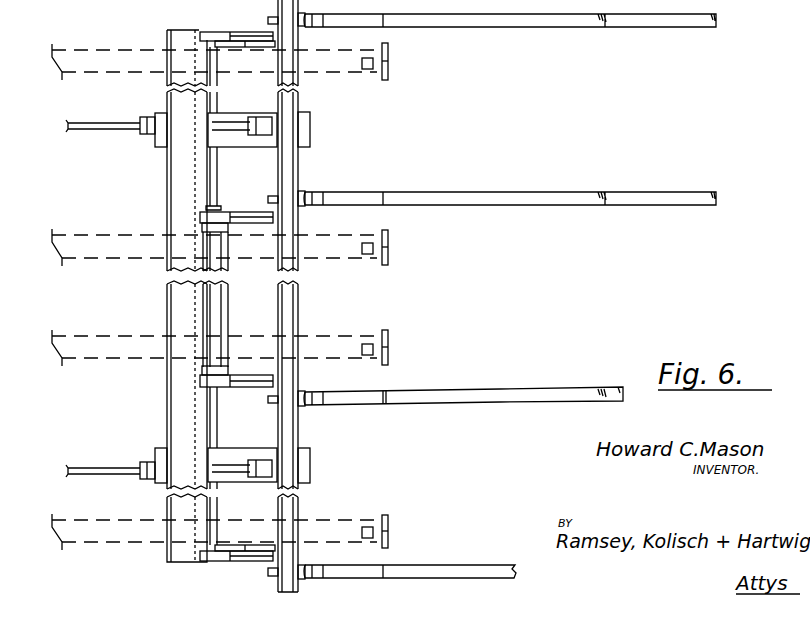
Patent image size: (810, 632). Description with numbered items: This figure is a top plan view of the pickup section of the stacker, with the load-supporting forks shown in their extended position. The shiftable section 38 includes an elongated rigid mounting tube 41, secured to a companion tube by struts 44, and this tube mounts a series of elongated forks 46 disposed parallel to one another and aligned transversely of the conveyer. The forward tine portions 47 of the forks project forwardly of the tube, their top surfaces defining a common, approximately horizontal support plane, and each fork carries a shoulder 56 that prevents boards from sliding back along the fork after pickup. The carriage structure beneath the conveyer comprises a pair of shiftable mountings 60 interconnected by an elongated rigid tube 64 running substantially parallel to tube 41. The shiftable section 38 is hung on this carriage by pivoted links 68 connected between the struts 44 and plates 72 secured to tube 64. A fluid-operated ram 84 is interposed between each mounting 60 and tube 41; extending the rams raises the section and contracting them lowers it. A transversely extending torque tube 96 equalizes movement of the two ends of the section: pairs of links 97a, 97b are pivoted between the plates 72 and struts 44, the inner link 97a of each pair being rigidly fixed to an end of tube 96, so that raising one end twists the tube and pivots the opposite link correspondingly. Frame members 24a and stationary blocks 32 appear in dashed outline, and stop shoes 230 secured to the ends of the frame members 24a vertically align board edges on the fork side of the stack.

The frame member 24a is at (320, 338).
The stationary block 32 is at (366, 342).
The shoe 230 is at (392, 344).
The shiftable section 38 is at (327, 171).
The tube 41 is at (285, 302).
The strut 44 is at (276, 213).
The fork 46 is at (434, 204).
The tine portion 47 is at (566, 202).
The shoulder 56 is at (390, 395).
The shiftable mounting 60 is at (163, 144).
The tube 64 is at (176, 418).
The pivoted link 68 is at (257, 33).
The plate 72 is at (202, 33).
The fluid-operated ram 84 is at (271, 136).
The torque tube 96 is at (213, 311).
The inner link 97a is at (200, 222).
The outer link 97b is at (202, 210).